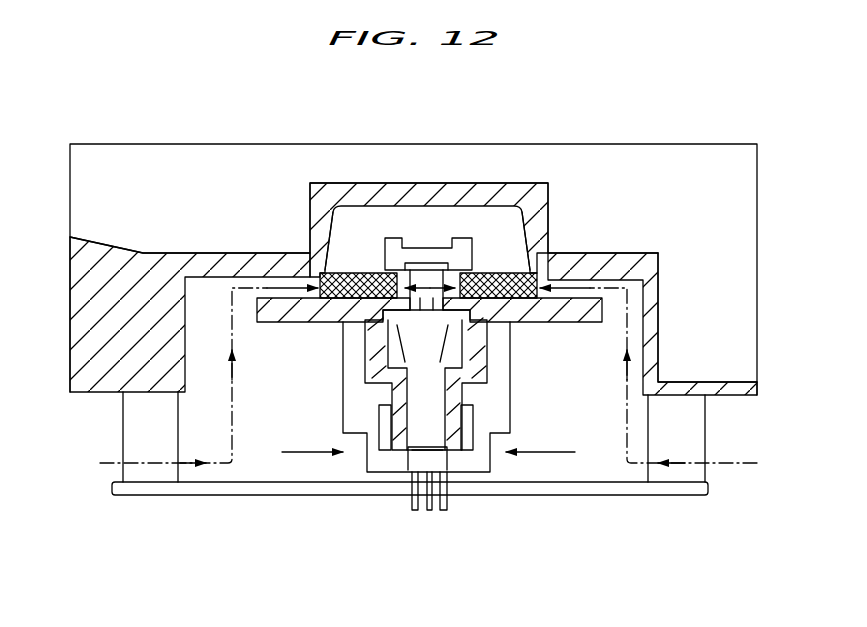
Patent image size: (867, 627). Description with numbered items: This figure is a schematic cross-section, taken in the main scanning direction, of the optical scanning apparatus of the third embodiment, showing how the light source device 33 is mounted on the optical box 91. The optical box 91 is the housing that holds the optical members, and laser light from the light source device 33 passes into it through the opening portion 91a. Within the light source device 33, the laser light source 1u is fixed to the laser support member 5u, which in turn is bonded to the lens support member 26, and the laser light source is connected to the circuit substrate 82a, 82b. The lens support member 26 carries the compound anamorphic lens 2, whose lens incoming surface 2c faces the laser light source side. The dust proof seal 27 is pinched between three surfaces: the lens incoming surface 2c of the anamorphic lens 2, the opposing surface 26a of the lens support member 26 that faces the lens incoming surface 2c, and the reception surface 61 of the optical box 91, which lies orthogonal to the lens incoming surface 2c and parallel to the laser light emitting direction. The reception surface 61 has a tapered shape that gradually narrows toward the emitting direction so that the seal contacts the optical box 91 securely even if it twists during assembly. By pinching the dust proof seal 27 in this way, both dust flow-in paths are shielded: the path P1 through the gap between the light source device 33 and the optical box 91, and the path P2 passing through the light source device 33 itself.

The optical box 91 is at (240, 253).
The lens support member 26 is at (593, 317).
The opening portion 91a is at (455, 192).
The reception surface 61 is at (510, 215).
The dust proof seal 27 is at (352, 272).
The anamorphic lens 2 is at (428, 262).
The lens incoming surface 2c is at (392, 238).
The opposing surface 26a is at (527, 320).
The light source device 33 is at (343, 365).
The circuit substrate 82a is at (163, 497).
The circuit substrate 82b is at (149, 588).
The laser support member 5u is at (368, 450).
The laser light source 1u is at (465, 448).
The flow-in path P1 is at (228, 466).
The flow-in path P2 is at (311, 455).